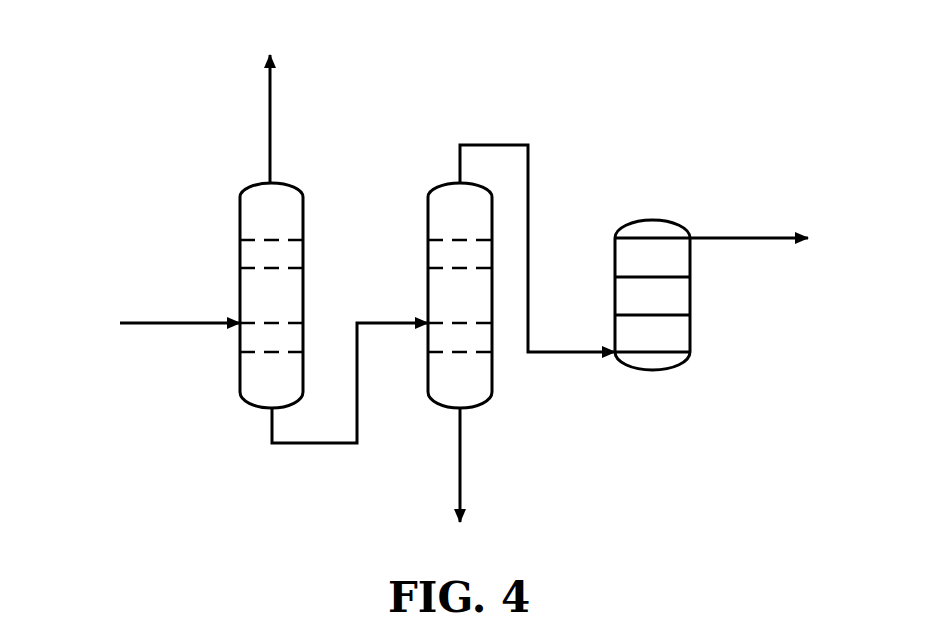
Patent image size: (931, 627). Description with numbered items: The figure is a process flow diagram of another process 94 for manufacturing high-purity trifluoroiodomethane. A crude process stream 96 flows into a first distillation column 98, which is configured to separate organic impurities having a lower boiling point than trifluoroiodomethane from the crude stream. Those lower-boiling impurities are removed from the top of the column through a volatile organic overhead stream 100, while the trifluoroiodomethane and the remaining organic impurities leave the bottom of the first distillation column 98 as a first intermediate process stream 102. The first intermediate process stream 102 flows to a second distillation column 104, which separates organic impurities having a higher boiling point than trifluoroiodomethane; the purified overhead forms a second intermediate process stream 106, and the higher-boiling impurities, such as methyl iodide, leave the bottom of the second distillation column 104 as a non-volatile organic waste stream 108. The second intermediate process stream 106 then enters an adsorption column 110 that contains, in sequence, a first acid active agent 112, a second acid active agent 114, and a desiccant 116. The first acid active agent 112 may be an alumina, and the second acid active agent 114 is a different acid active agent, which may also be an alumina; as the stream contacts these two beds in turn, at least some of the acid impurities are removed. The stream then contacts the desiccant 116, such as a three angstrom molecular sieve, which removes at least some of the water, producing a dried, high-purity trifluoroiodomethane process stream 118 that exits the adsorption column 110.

The process 94 is at (133, 117).
The crude process stream 96 is at (163, 323).
The first distillation column 98 is at (240, 210).
The volatile organic overhead stream 100 is at (270, 127).
The first intermediate process stream 102 is at (367, 323).
The second distillation column 104 is at (428, 193).
The second intermediate process stream 106 is at (518, 145).
The non-volatile organic waste stream 108 is at (462, 463).
The adsorption column 110 is at (678, 257).
The first acid active agent 112 is at (680, 332).
The second acid active agent 114 is at (680, 293).
The desiccant 116 is at (670, 265).
The high-purity CF3I process stream 118 is at (743, 238).